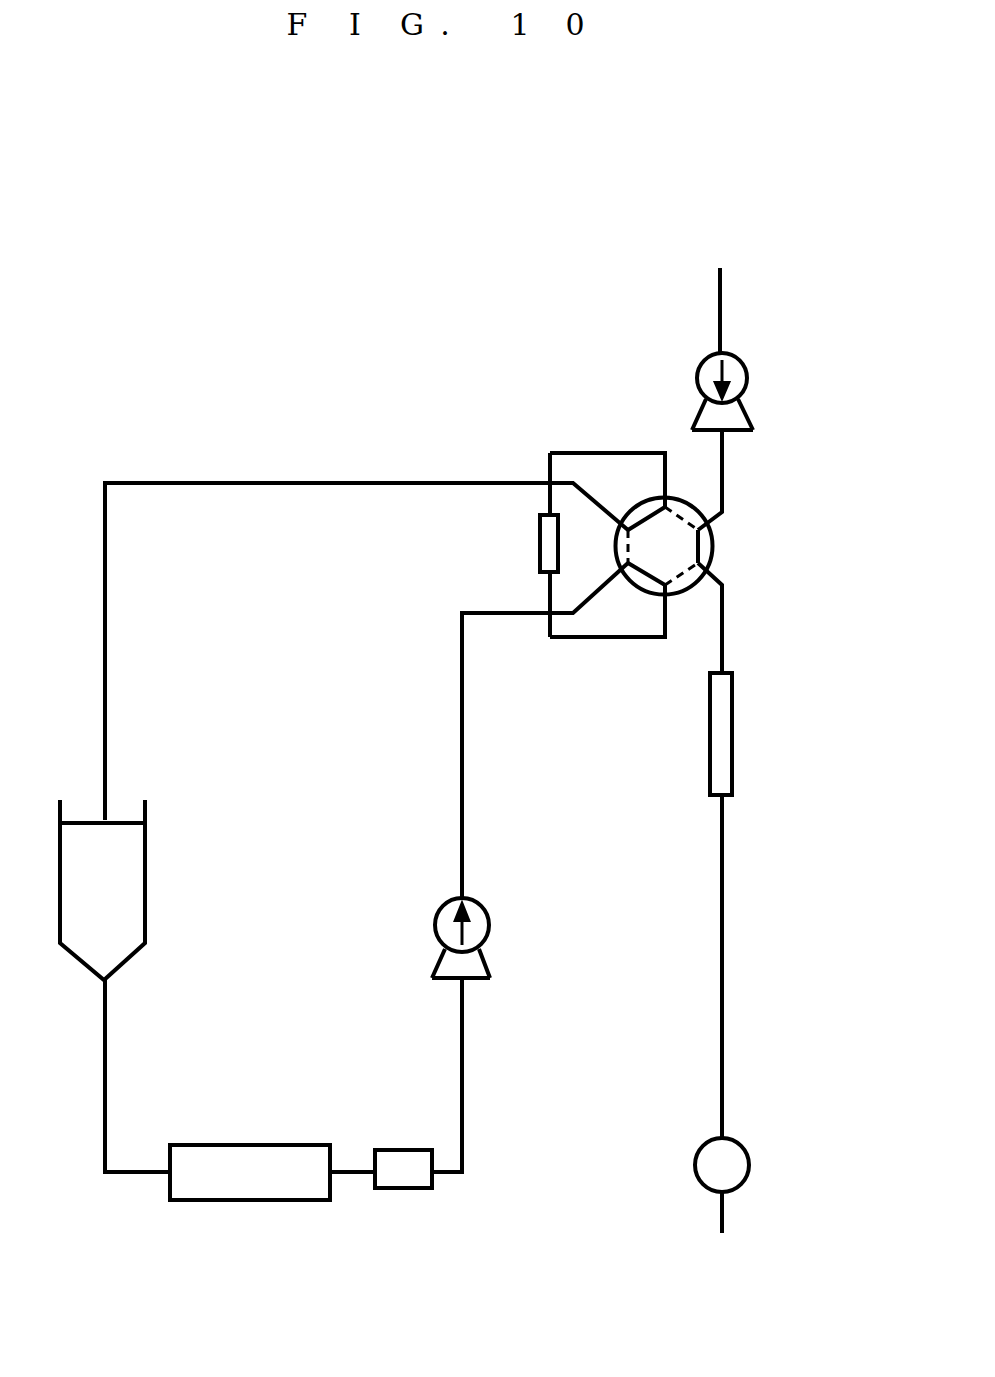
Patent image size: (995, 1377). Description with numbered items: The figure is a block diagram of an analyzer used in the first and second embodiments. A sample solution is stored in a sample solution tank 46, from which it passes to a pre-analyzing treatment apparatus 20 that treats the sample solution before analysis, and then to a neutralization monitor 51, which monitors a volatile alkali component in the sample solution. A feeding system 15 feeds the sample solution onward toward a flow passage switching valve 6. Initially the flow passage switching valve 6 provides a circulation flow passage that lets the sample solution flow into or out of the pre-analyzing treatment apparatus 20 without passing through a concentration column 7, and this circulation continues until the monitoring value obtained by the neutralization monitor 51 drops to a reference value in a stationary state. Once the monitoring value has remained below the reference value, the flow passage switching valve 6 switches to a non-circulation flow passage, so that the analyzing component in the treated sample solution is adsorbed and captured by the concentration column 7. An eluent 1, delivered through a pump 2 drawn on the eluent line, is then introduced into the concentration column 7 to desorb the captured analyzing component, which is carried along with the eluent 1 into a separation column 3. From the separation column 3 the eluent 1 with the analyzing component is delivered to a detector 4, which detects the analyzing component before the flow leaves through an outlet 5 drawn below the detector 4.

The eluent 1 is at (695, 279).
The pump 2 is at (698, 370).
The separation column 3 is at (722, 718).
The detector 4 is at (748, 1155).
The outlet line 5 is at (713, 1245).
The flow passage switching valve 6 is at (706, 548).
The concentration column 7 is at (540, 533).
The feeding system 15 is at (483, 905).
The pre-analyzing treatment apparatus 20 is at (220, 1200).
The sample solution tank 46 is at (145, 897).
The neutralization monitor 51 is at (397, 1192).